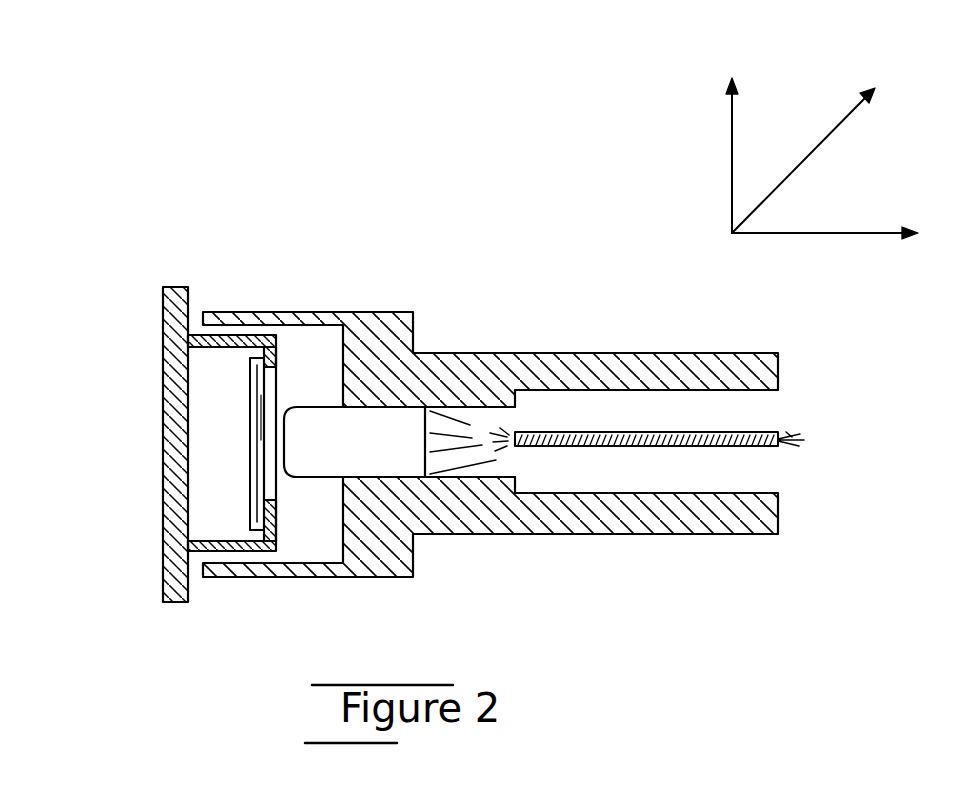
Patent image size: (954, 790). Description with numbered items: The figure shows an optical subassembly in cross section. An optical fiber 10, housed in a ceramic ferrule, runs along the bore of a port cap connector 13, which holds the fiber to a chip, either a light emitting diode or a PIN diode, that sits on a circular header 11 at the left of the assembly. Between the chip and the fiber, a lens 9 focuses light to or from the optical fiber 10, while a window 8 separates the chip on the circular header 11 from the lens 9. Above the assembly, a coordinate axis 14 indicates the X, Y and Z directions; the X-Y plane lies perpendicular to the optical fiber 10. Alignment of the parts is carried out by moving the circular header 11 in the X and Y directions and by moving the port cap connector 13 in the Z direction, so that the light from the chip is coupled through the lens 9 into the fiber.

The window 8 is at (254, 336).
The lens 9 is at (320, 418).
The optical fiber 10 is at (783, 430).
The circular header 11 is at (163, 570).
The port cap connector 13 is at (403, 312).
The coordinate axis 14 is at (728, 233).